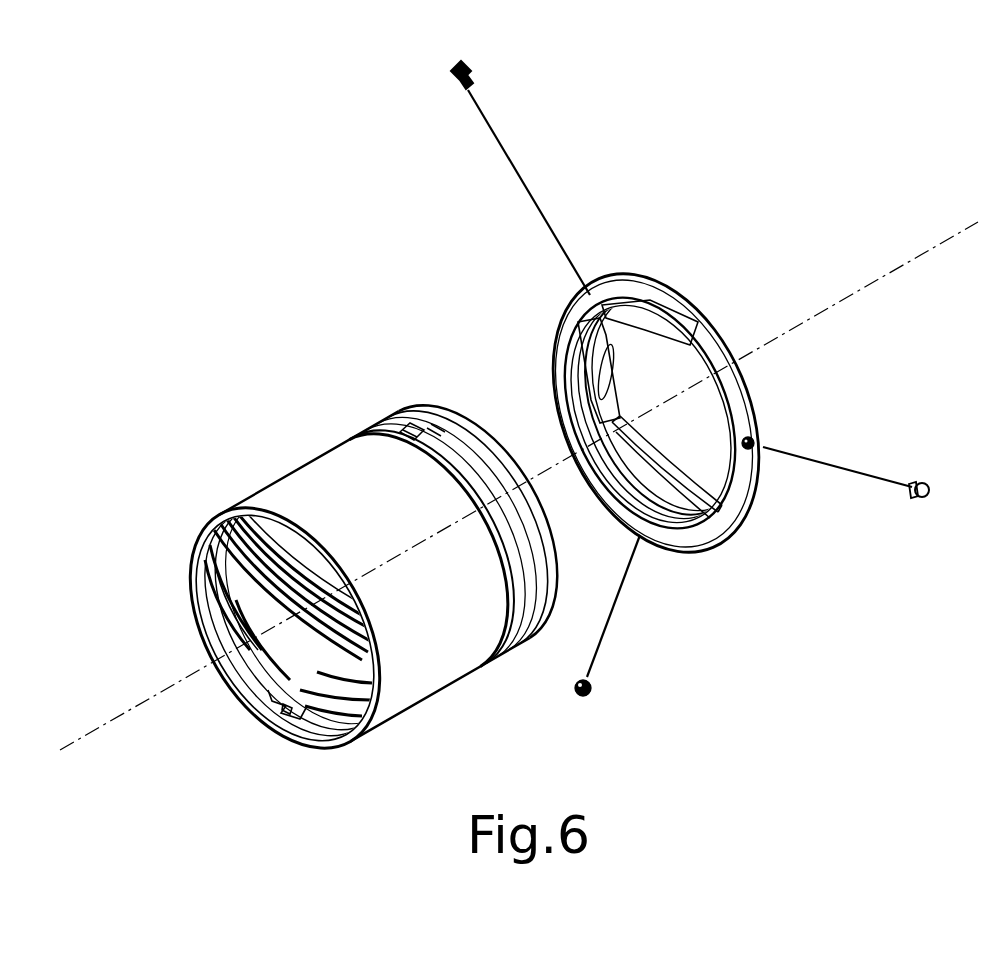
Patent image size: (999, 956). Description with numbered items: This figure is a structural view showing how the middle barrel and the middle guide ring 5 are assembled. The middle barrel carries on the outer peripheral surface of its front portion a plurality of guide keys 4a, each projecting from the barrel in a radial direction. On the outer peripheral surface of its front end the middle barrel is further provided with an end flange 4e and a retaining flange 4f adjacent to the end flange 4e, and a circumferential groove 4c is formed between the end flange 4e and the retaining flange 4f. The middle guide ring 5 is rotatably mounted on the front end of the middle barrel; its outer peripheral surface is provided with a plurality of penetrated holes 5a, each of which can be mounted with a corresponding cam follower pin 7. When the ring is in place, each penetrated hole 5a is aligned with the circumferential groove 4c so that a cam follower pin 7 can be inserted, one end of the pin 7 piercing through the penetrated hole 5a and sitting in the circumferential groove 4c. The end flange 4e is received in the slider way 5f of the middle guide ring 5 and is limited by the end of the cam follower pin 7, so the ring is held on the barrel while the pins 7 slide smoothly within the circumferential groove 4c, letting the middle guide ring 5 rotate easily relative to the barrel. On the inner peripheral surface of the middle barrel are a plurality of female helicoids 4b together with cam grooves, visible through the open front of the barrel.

The guide key 4a is at (403, 428).
The female helicoid 4b is at (240, 665).
The circumferential groove 4c is at (487, 470).
The end flange 4e is at (453, 415).
The retaining flange 4f is at (437, 432).
The middle guide ring 5 is at (663, 390).
The penetrated hole 5a is at (762, 450).
The slider way 5f is at (560, 350).
The cam follower pin 7 is at (861, 480).